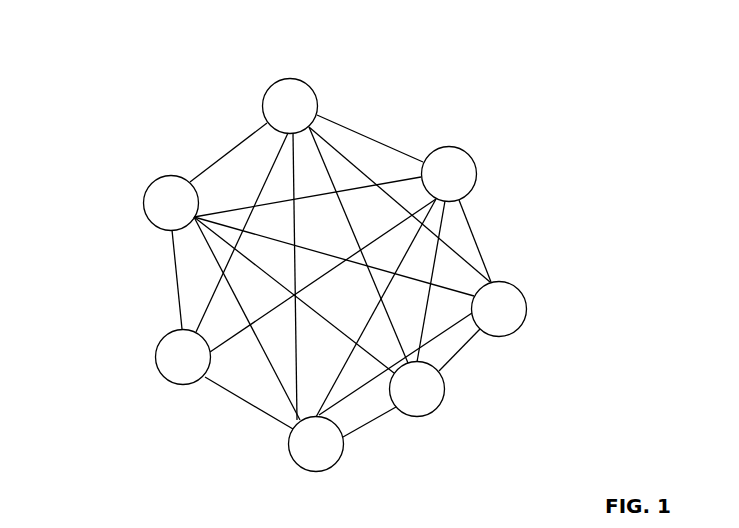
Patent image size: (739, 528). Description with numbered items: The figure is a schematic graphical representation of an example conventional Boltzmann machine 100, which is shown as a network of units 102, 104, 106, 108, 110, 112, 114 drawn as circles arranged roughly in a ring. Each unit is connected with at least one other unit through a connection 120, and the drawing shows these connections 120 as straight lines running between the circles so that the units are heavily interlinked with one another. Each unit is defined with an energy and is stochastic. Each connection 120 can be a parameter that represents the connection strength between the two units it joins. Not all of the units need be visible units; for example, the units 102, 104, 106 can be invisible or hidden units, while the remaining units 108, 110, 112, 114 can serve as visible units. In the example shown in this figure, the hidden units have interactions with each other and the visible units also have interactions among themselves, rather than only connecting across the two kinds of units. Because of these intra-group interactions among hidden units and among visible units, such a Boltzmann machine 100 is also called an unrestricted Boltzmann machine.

The conventional Boltzmann machine 100 is at (139, 50).
The unit 102 is at (282, 79).
The unit 104 is at (477, 170).
The unit 106 is at (527, 307).
The unit 108 is at (415, 417).
The unit 110 is at (313, 472).
The unit 112 is at (182, 385).
The unit 114 is at (144, 208).
The connection 120 is at (383, 143).